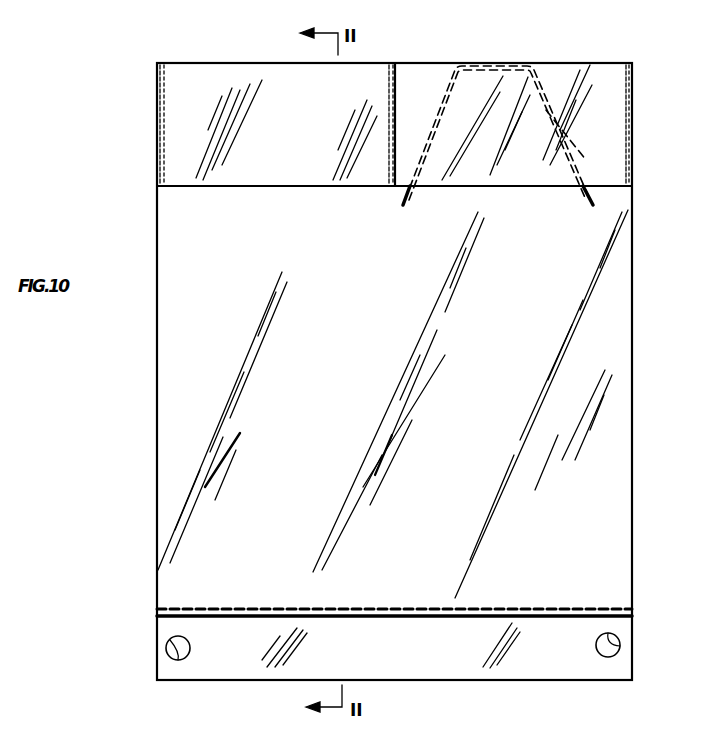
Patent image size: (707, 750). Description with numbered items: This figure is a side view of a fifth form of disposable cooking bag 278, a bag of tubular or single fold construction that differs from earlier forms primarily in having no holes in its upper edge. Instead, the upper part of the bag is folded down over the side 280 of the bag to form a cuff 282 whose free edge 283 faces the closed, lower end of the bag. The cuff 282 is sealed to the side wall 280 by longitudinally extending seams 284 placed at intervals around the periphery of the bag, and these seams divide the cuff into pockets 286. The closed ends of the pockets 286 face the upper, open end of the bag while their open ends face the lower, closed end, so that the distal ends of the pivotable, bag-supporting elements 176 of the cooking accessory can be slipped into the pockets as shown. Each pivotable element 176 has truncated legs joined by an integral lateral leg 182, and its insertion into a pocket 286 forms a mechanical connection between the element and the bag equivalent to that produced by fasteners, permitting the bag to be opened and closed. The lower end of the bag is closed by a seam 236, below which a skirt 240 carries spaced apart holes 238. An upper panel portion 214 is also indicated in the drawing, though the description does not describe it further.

The pivotable element 176 is at (570, 134).
The lateral leg 182 is at (497, 62).
The upper panel portion 214 is at (513, 90).
The seam 236 is at (437, 607).
The holes 238 is at (167, 646).
The skirt 240 is at (450, 664).
The disposable bag 278 is at (246, 44).
The side 280 is at (376, 336).
The cuff 282 is at (252, 190).
The free edge 283 is at (335, 190).
The seams 284 is at (157, 120).
The pockets 286 is at (200, 73).